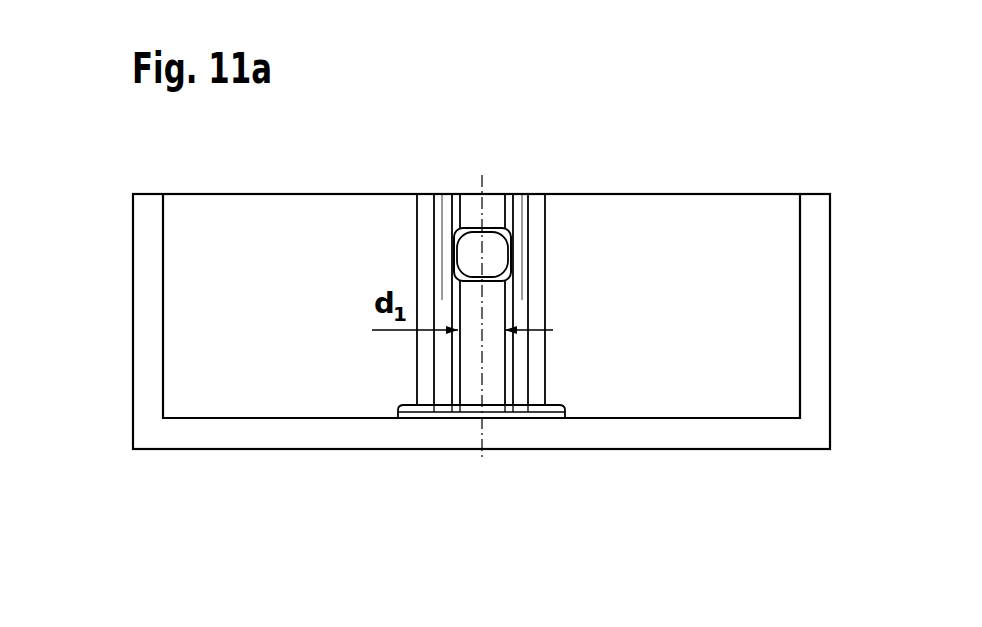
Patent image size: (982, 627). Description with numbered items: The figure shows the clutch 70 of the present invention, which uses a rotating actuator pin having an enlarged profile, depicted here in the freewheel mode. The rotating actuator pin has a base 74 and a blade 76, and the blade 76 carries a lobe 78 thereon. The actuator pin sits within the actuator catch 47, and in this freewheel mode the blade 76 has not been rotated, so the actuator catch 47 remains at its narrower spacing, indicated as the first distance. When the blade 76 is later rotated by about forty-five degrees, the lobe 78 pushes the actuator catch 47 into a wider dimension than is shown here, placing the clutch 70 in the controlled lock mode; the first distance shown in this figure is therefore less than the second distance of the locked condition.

The clutch 70 is at (112, 322).
The lobe 78 is at (532, 238).
The base 74 is at (513, 277).
The blade 76 is at (490, 250).
The actuator catch 47 is at (473, 392).